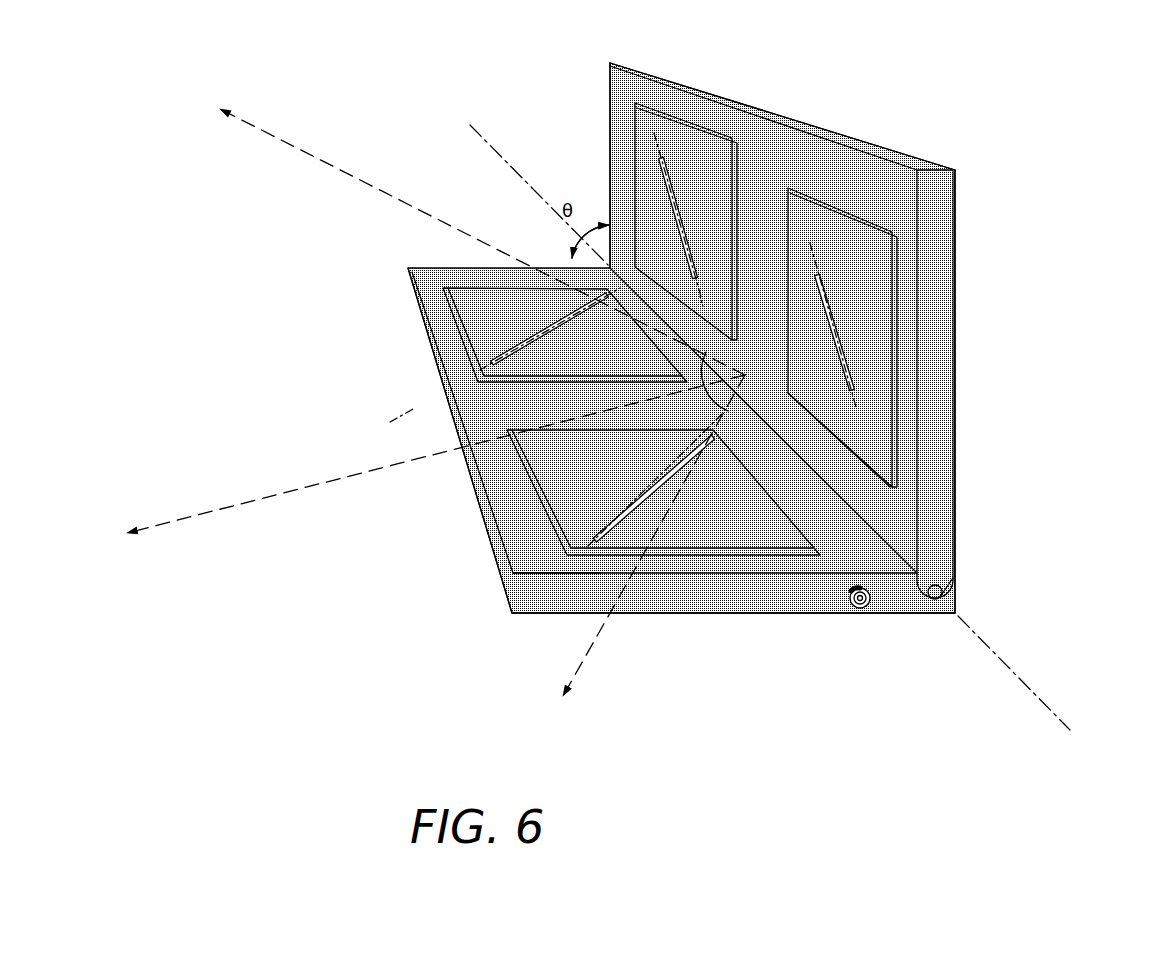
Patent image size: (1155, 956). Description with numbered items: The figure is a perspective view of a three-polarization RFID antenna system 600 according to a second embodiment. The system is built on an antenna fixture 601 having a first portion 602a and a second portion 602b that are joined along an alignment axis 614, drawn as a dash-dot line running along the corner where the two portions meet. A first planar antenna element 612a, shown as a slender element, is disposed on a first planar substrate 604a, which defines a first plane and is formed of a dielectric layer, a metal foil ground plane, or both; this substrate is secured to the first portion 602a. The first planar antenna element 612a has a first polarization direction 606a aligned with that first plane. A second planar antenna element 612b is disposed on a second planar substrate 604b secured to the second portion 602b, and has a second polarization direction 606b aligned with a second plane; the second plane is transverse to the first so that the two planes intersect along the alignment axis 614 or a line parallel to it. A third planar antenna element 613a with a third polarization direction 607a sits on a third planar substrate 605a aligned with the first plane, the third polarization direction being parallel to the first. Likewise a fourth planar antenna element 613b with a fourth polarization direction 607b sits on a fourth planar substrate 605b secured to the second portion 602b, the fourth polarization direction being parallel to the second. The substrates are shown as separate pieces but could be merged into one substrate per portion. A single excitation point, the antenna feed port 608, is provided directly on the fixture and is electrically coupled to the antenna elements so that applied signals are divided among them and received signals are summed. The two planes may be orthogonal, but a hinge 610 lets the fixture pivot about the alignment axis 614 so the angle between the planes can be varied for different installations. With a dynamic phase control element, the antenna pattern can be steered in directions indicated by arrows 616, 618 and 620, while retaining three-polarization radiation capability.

The RFID antenna system 600 is at (979, 117).
The antenna fixture 601 is at (962, 498).
The first portion 602a is at (628, 62).
The second portion 602b is at (473, 488).
The first planar substrate 604a is at (882, 264).
The second planar substrate 604b is at (793, 535).
The third planar substrate 605a is at (723, 162).
The fourth planar substrate 605b is at (650, 364).
The first polarization direction 606a is at (859, 419).
The second polarization direction 606b is at (549, 577).
The third polarization direction 607a is at (705, 313).
The fourth polarization direction 607b is at (403, 415).
The antenna feed port 608 is at (860, 634).
The hinge 610 is at (969, 574).
The first planar antenna element 612a is at (840, 356).
The second planar antenna element 612b is at (650, 480).
The third planar antenna element 613a is at (673, 213).
The fourth planar antenna element 613b is at (541, 327).
The alignment axis 614 is at (507, 146).
The arrow 616 is at (456, 235).
The arrow 618 is at (432, 479).
The arrow 620 is at (642, 555).